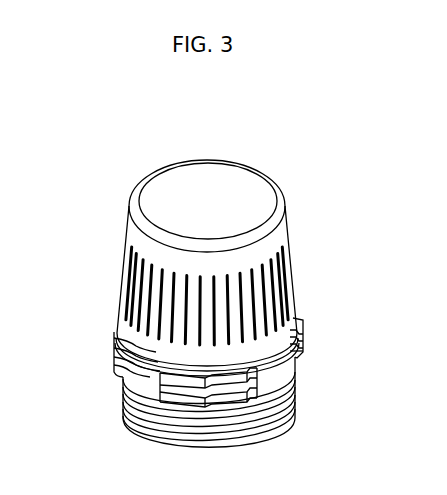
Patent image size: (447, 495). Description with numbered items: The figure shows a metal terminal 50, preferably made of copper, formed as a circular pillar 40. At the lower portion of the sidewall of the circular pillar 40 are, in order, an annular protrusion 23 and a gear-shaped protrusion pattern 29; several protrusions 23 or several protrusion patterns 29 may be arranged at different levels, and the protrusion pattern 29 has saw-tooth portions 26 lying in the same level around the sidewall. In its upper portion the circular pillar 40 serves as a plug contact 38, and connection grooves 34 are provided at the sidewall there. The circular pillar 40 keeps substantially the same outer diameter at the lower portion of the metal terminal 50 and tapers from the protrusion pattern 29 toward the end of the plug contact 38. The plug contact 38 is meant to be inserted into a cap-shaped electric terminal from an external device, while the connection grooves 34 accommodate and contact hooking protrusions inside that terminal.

The metal terminal 50 is at (118, 116).
The plug contact 38 is at (163, 193).
The circular pillar 40 is at (278, 194).
The gear-shaped protrusion pattern 29 is at (116, 334).
The saw-tooth portions 26 is at (297, 318).
The annular protrusion 23 is at (126, 414).
The connection grooves 34 is at (220, 337).